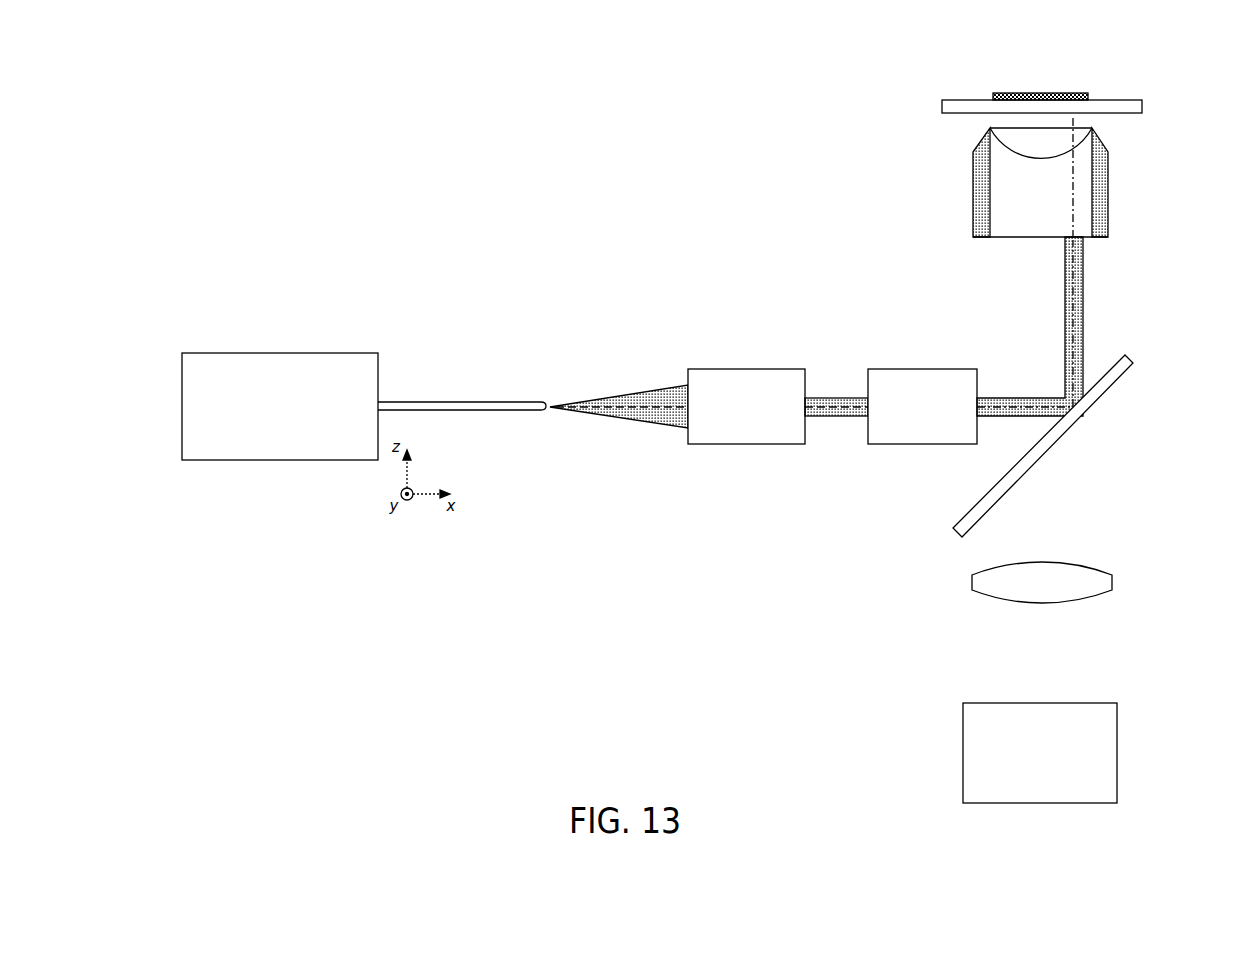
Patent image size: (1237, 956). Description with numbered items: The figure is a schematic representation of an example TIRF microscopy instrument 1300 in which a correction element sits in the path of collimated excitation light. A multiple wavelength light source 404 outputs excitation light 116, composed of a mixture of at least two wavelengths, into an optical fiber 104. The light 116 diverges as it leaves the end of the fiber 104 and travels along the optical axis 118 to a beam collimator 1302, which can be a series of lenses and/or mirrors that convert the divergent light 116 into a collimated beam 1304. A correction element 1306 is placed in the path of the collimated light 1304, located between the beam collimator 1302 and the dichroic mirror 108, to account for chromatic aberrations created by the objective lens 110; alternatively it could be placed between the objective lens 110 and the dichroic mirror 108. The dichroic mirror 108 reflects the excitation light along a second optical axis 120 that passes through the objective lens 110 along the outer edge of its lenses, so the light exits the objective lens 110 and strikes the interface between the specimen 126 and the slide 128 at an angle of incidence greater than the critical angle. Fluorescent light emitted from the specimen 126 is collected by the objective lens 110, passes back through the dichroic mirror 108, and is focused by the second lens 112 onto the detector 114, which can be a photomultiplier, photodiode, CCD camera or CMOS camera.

The TIRF microscopy instrument 1300 is at (400, 190).
The multiple wavelength light source 404 is at (287, 447).
The optical fiber 104 is at (484, 413).
The excitation light 116 is at (635, 420).
The optical axis 118 is at (640, 405).
The beam collimator 1302 is at (750, 437).
The collimated beam 1304 is at (835, 395).
The correction element 1306 is at (920, 437).
The second optical axis 120 is at (1083, 285).
The dichroic mirror 108 is at (1120, 378).
The objective lens 110 is at (973, 180).
The specimen 126 is at (1033, 92).
The slide 128 is at (1143, 105).
The second lens 112 is at (1087, 598).
The detector 114 is at (1105, 788).